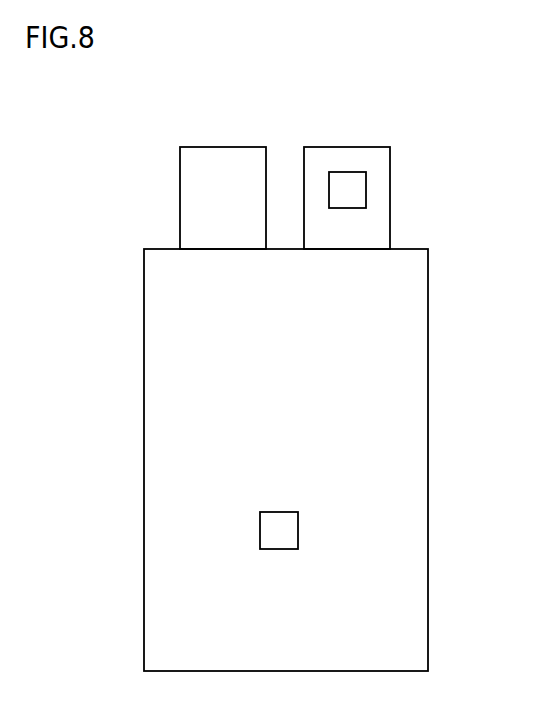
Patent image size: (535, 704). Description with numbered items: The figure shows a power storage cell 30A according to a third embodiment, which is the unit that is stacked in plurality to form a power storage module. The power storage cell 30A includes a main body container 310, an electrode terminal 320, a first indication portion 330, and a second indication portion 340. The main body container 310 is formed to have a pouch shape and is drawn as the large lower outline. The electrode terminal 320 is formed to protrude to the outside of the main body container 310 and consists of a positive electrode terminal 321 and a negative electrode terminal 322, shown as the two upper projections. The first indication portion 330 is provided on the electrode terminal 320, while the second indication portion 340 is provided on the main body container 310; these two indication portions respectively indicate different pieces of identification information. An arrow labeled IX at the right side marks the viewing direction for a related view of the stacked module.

The power storage cell 30A is at (131, 216).
The main body container 310 is at (430, 327).
The electrode terminal 320 is at (367, 99).
The positive electrode terminal 321 is at (222, 157).
The negative electrode terminal 322 is at (347, 157).
The first indication portion 330 is at (352, 190).
The second indication portion 340 is at (287, 530).
The section line IX is at (523, 407).